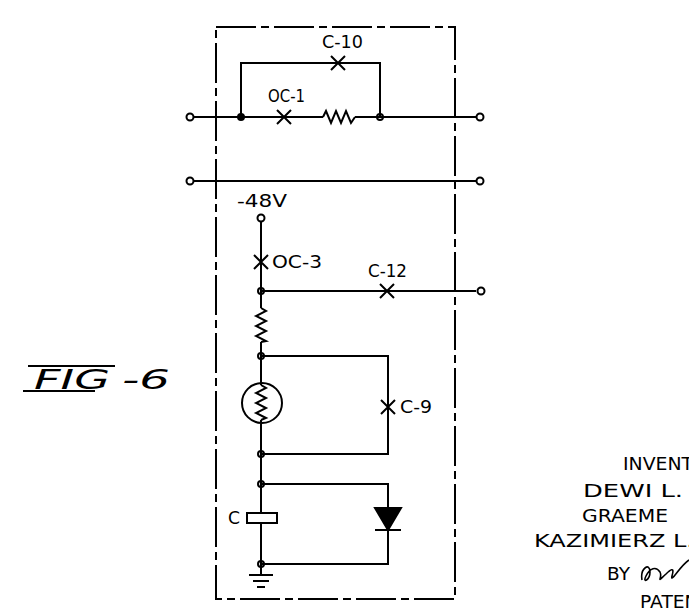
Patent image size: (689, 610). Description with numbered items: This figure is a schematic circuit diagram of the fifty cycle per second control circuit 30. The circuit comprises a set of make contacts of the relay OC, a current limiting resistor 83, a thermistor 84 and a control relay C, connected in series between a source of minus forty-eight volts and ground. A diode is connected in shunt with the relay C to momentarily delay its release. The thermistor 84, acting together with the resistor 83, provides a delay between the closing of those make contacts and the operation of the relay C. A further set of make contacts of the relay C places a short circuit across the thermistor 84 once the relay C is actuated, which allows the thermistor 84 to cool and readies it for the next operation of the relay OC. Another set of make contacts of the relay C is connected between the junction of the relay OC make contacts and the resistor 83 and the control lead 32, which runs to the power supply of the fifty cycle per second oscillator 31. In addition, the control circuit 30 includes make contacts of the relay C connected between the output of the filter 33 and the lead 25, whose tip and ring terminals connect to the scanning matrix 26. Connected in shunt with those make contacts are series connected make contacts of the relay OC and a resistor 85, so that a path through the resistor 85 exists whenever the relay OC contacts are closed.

The lead 25T 25 is at (481, 121).
The scanning matrix 26 is at (573, 152).
The 50 cycle per second control circuit 30 is at (216, 277).
The 50 c/s oscillator power supply 31 is at (584, 318).
The control lead 32 is at (478, 289).
The filter 33 is at (260, 144).
The current limiting resistor 83 is at (266, 322).
The thermistor 84 is at (281, 397).
The resistor 85 is at (341, 122).